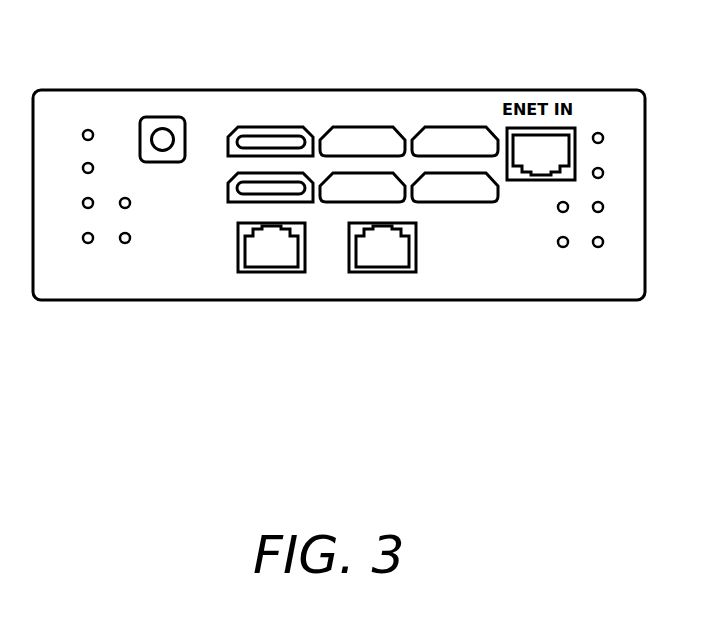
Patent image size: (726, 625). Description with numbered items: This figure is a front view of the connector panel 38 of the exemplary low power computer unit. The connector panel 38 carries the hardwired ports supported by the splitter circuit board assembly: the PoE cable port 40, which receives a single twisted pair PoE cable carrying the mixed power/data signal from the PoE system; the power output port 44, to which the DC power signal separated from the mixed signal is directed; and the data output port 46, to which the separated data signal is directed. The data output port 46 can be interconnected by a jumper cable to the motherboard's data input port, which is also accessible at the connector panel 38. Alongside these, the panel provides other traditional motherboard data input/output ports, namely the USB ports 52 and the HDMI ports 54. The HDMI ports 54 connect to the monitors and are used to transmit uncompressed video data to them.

The connector panel 38 is at (623, 270).
The power output port 44 is at (162, 117).
The USB ports 52 is at (292, 125).
The HDMI ports 54 is at (382, 127).
The data output port 46 is at (238, 253).
The PoE cable port 40 is at (416, 252).